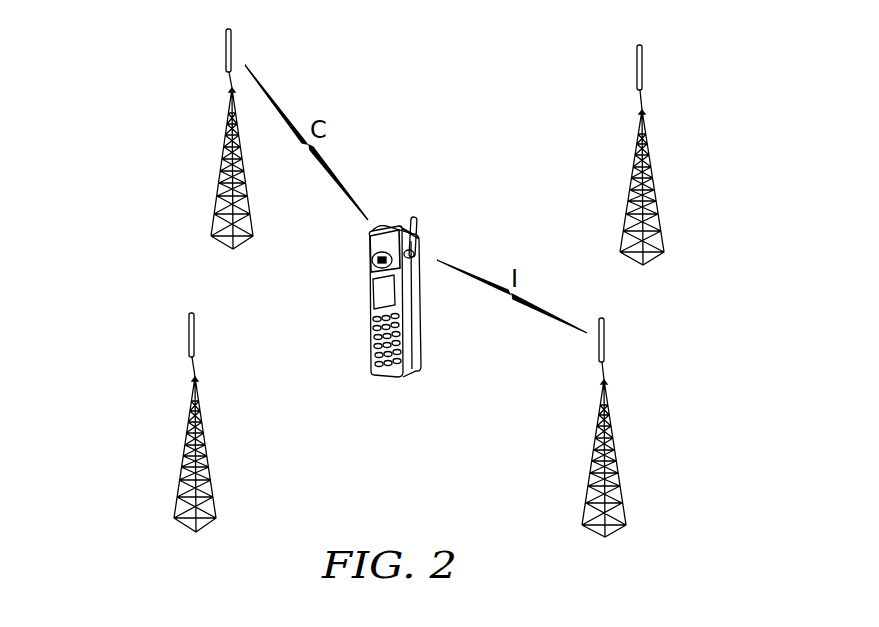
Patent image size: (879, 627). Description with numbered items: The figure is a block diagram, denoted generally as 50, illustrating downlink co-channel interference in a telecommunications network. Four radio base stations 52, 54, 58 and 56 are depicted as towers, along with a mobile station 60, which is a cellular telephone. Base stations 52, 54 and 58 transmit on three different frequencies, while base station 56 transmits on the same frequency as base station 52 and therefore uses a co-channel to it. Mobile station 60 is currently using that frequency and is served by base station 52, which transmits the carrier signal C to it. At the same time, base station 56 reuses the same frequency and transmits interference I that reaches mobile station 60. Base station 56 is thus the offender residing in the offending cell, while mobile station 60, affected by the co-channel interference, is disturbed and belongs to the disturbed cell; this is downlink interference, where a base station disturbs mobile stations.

The block diagram 50 is at (129, 98).
The radio base station 52 is at (215, 192).
The radio base station 54 is at (660, 205).
The radio base station 56 is at (625, 477).
The radio base station 58 is at (180, 473).
The mobile station 60 is at (421, 325).